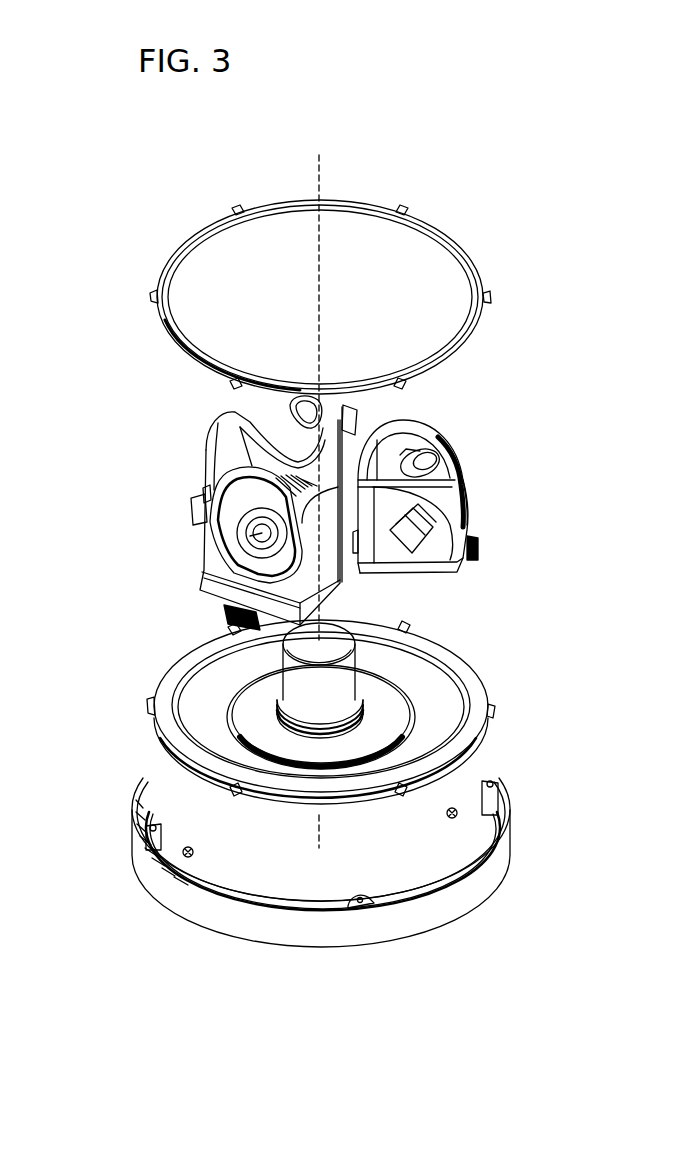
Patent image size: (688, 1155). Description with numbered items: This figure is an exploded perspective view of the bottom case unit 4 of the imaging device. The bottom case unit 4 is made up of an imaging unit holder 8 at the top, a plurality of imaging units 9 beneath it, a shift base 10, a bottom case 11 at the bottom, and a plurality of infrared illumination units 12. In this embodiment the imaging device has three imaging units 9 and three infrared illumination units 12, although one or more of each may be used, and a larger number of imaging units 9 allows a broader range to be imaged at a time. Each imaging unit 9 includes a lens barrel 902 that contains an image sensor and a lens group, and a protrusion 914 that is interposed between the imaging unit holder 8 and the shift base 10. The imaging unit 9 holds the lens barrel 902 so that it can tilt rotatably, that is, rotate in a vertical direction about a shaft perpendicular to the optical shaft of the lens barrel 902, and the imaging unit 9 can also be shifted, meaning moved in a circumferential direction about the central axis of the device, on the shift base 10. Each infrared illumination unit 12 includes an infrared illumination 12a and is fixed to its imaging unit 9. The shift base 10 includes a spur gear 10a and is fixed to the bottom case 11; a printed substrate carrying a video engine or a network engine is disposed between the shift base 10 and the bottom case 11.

The bottom case unit 4 is at (72, 186).
The imaging unit holder 8 is at (145, 282).
The imaging unit 9 is at (192, 428).
The shift base 10 is at (170, 726).
The spur gear 10a is at (425, 730).
The bottom case 11 is at (232, 912).
The infrared illumination unit 12 is at (355, 420).
The infrared illumination 12a is at (195, 518).
The lens barrel 902 is at (200, 572).
The protrusion 914 is at (225, 612).